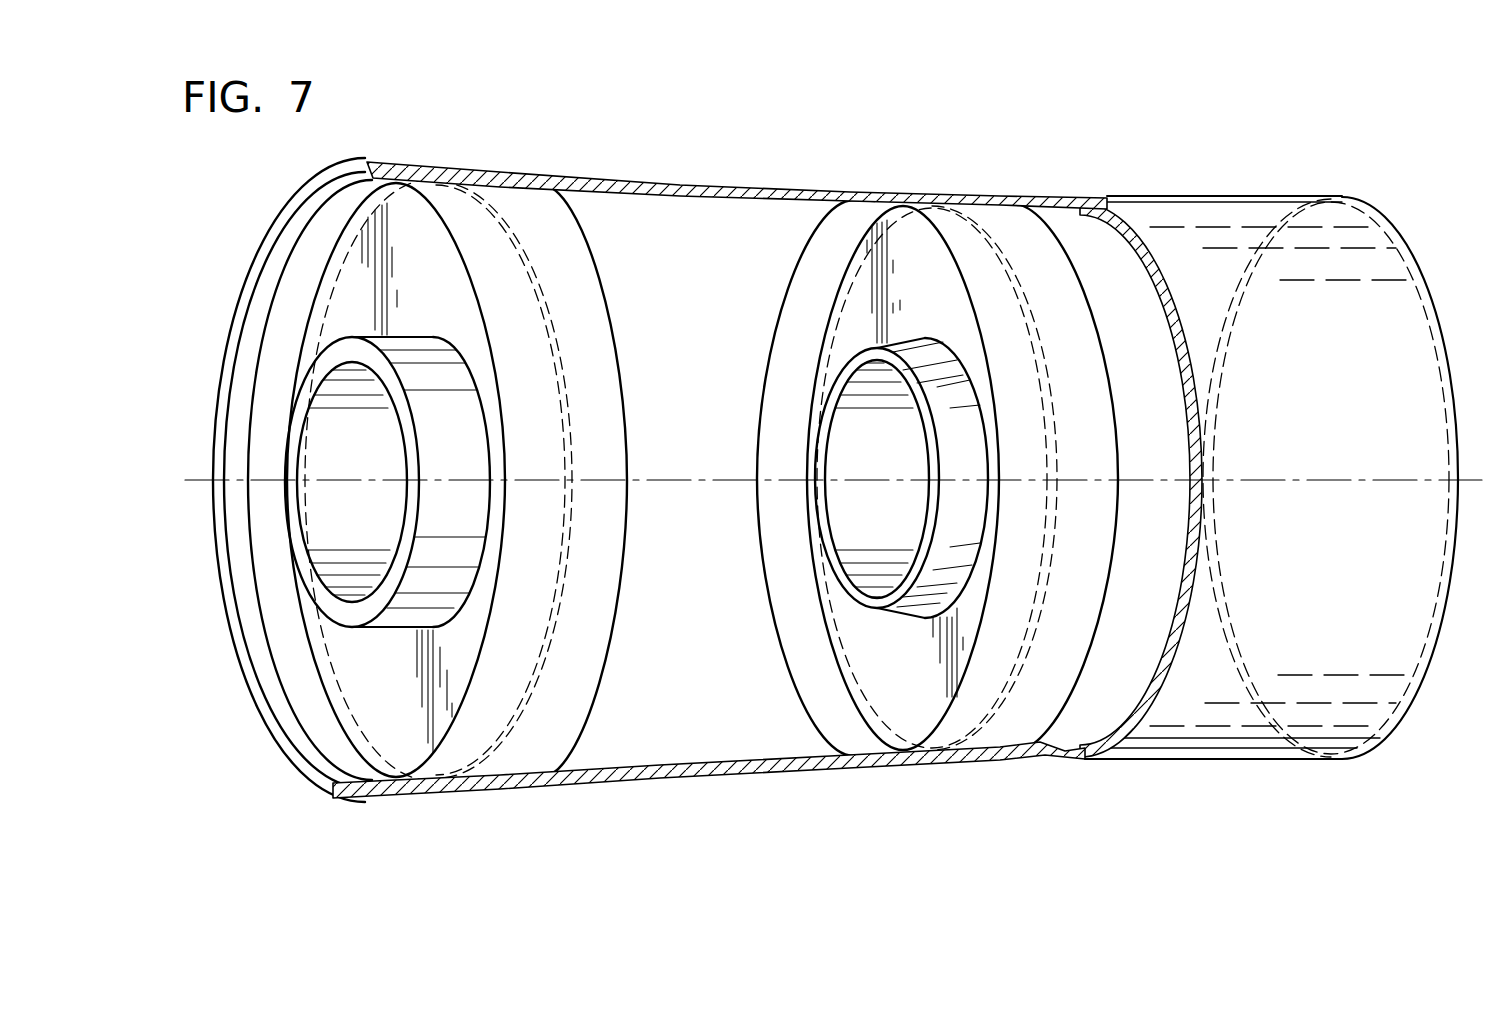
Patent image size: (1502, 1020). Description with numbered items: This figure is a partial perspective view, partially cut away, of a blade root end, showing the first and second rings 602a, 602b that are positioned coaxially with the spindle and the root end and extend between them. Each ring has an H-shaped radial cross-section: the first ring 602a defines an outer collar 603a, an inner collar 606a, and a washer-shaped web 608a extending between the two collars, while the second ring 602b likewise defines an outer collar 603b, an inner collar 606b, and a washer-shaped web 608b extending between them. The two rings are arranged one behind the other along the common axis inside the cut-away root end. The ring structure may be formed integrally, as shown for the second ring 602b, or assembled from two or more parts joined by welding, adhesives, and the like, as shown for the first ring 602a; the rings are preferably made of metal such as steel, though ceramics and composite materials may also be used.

The first ring 602a is at (560, 260).
The outer collar 603a is at (617, 335).
The inner collar 606a is at (347, 341).
The washer-shaped web 608a is at (408, 669).
The second ring 602b is at (1072, 335).
The outer collar 603b is at (1113, 403).
The inner collar 606b is at (873, 352).
The washer-shaped web 608b is at (922, 653).